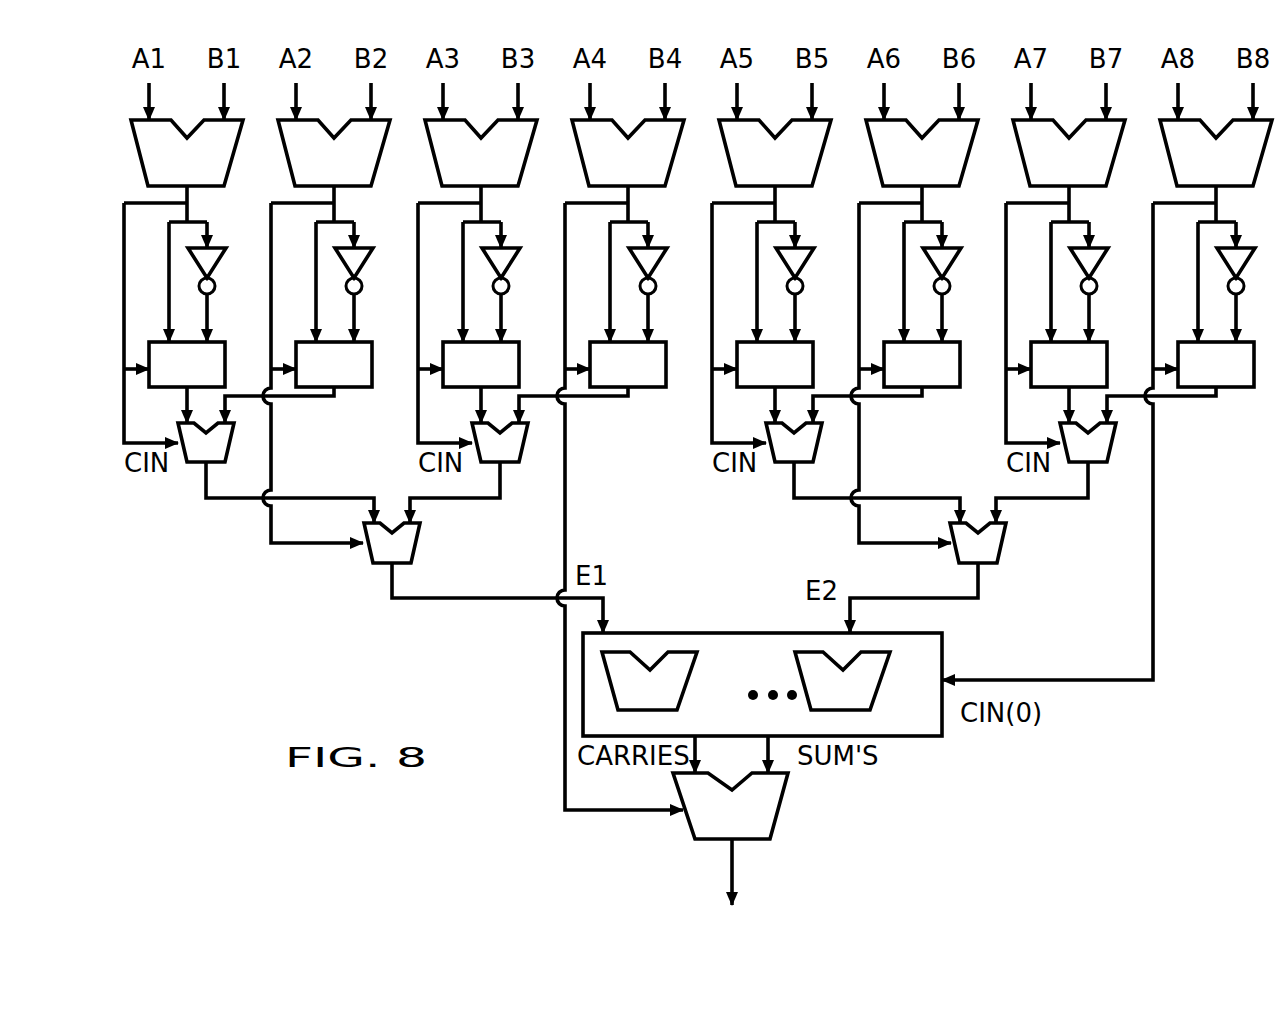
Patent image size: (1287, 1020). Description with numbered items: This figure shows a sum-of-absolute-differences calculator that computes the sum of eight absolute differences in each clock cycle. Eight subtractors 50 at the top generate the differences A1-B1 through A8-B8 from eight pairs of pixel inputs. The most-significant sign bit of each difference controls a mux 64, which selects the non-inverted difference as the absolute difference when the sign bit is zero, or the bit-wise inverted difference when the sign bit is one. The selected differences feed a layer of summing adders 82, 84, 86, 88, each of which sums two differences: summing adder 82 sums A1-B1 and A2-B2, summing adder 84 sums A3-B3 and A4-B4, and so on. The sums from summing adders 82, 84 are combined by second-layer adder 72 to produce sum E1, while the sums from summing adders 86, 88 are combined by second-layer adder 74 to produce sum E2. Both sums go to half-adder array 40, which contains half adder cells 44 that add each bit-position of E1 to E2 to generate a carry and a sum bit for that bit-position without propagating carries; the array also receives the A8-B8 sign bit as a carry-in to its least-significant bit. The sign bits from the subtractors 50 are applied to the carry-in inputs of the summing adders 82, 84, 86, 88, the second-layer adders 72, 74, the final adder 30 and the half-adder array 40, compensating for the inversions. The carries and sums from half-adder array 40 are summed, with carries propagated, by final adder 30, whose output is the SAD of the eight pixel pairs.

The subtractor 50 is at (234, 157).
The mux 64 is at (1229, 377).
The summing adder 82 is at (230, 445).
The summing adder 84 is at (524, 445).
The summing adder 86 is at (818, 445).
The summing adder 88 is at (1112, 445).
The second-layer adder 72 is at (416, 543).
The second-layer adder 74 is at (1002, 543).
The half-adder array 40 is at (742, 669).
The half adder cell 44 is at (687, 683).
The final adder 30 is at (779, 810).